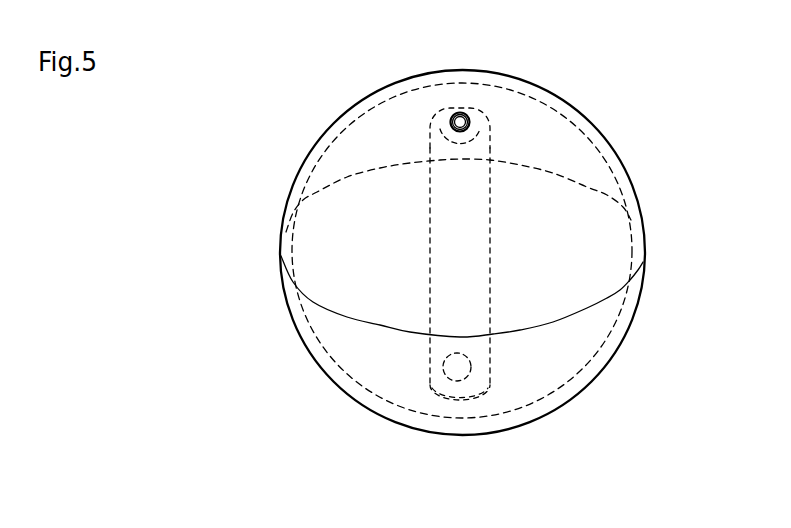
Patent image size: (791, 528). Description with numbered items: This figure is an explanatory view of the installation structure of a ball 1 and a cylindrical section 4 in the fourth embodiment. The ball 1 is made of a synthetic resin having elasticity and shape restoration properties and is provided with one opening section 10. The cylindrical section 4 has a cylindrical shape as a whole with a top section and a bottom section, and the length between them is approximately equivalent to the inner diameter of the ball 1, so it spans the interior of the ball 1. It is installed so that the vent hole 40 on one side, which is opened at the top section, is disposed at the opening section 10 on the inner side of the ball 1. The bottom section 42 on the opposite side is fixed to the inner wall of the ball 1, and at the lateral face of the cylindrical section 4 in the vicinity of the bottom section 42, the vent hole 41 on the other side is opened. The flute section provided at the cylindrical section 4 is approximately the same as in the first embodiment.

The ball 1 is at (608, 358).
The cylindrical section 4 is at (490, 148).
The opening section 10 is at (452, 115).
The vent hole 40 is at (460, 112).
The vent hole 41 is at (452, 378).
The bottom section 42 is at (460, 402).